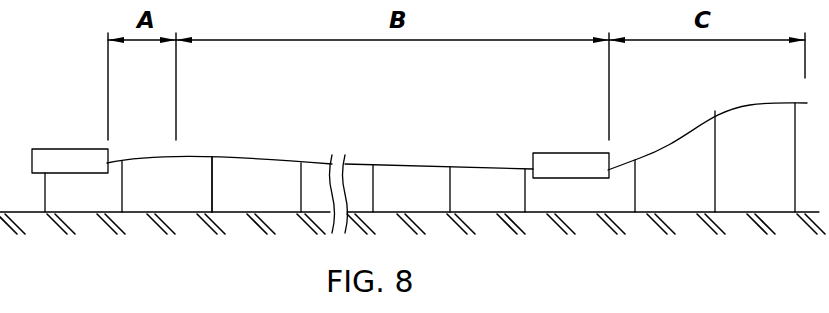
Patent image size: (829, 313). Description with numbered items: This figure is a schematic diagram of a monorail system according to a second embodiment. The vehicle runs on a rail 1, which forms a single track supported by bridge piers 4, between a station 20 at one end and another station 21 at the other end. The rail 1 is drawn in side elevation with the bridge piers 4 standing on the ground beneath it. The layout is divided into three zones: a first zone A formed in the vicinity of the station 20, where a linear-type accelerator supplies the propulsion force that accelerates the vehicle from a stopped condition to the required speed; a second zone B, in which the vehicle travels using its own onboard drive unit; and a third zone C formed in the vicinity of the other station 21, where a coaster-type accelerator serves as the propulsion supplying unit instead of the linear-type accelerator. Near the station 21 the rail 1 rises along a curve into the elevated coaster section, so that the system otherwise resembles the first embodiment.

The rail 1 is at (270, 162).
The bridge pier 4 is at (213, 182).
The station 20 is at (68, 162).
The station 21 is at (574, 163).